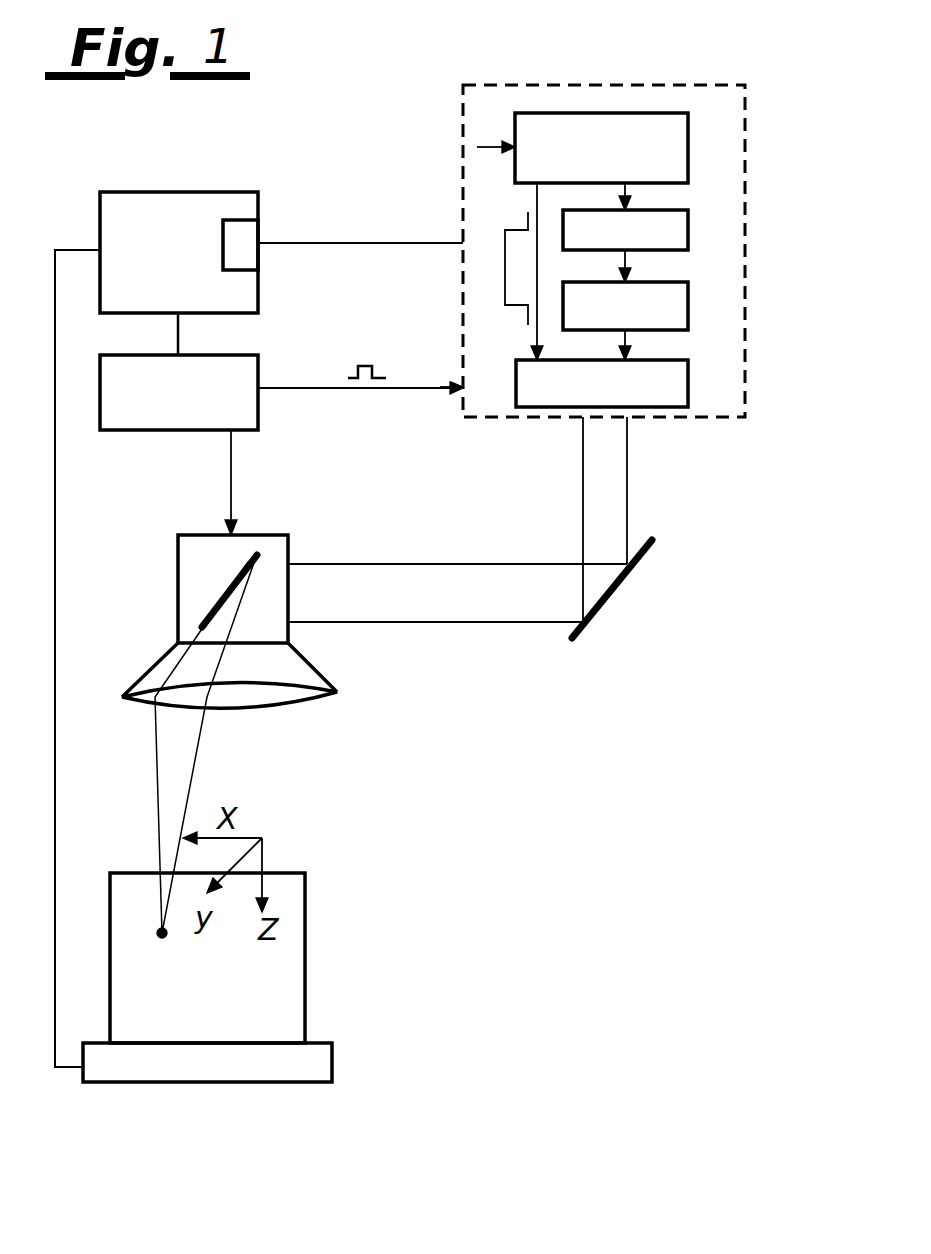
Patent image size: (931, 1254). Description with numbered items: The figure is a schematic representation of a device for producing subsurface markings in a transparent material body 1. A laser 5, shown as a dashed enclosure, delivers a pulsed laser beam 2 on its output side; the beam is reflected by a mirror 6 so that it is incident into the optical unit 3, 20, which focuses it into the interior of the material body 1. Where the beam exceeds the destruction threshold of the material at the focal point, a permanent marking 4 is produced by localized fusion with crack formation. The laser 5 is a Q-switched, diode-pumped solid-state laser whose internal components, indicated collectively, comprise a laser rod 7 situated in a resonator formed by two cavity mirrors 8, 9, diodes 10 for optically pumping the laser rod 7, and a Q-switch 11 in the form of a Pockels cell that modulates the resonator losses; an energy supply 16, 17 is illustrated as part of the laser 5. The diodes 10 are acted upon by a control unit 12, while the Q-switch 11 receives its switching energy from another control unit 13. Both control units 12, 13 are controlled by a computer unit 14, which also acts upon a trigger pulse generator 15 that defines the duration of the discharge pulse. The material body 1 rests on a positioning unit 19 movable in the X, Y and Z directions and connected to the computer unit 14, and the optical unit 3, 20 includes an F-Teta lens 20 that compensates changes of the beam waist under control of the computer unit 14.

The transparent material body 1 is at (280, 992).
The pulsed laser beam 2 is at (192, 762).
The optical unit 3 is at (293, 695).
The permanent marking 4 is at (156, 933).
The laser 5 is at (563, 85).
The mirror 6 is at (618, 585).
The laser rod 7 is at (676, 421).
The cavity mirror 8 is at (676, 421).
The cavity mirror 9 is at (676, 421).
The diodes 10 is at (676, 421).
The Q-switch 11 is at (637, 380).
The control unit 12 is at (245, 246).
The control unit 13 is at (678, 303).
The computer unit 14 is at (162, 248).
The trigger pulse generator 15 is at (237, 388).
The energy supply 16 is at (612, 148).
The energy supply 17 is at (668, 226).
The positioning unit 19 is at (290, 1057).
The F-Teta lens 20 is at (273, 558).